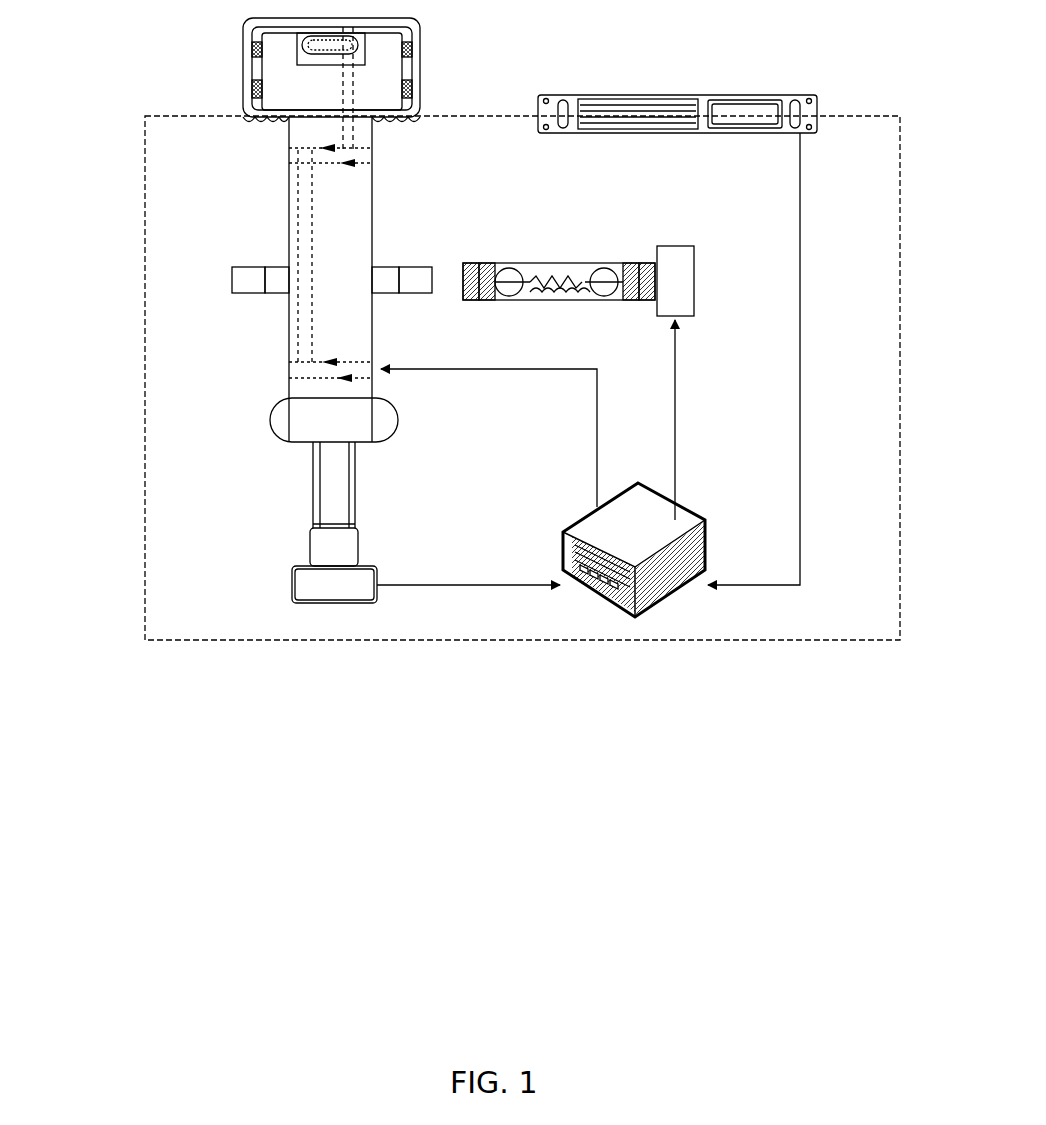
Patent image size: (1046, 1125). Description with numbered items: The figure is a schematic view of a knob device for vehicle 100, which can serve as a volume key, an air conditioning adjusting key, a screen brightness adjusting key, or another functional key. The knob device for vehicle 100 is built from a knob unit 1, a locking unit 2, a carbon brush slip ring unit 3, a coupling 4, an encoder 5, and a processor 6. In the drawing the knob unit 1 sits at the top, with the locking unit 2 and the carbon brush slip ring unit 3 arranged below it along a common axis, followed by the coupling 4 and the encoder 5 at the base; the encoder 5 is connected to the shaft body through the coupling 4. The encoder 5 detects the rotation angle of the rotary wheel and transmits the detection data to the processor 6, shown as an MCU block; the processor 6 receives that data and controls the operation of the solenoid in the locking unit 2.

The knob device for vehicle 100 is at (228, 177).
The knob unit 1 is at (272, 72).
The locking unit 2 is at (253, 280).
The carbon brush slip ring unit 3 is at (310, 421).
The coupling 4 is at (322, 578).
The encoder 5 is at (655, 614).
The processor 6 is at (600, 265).